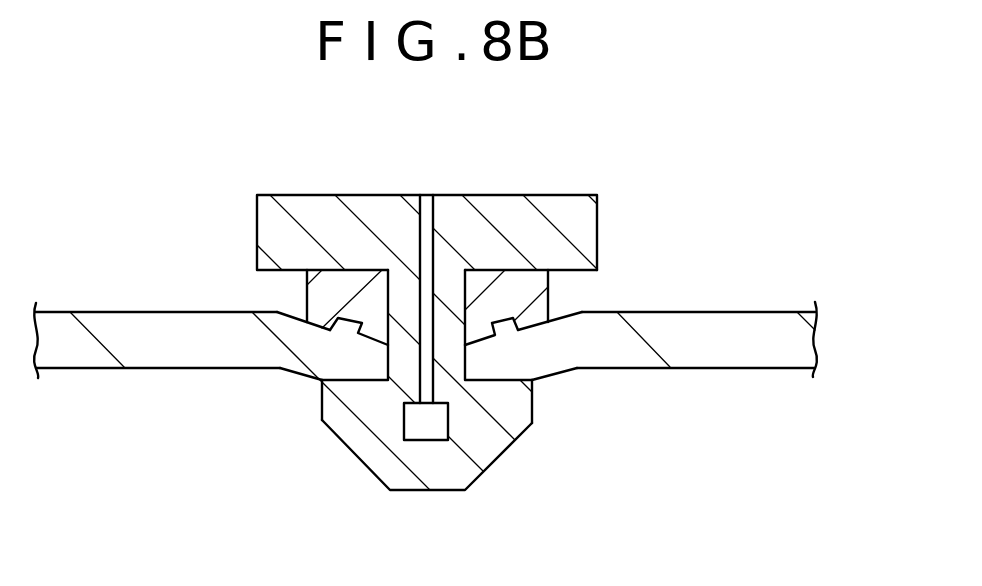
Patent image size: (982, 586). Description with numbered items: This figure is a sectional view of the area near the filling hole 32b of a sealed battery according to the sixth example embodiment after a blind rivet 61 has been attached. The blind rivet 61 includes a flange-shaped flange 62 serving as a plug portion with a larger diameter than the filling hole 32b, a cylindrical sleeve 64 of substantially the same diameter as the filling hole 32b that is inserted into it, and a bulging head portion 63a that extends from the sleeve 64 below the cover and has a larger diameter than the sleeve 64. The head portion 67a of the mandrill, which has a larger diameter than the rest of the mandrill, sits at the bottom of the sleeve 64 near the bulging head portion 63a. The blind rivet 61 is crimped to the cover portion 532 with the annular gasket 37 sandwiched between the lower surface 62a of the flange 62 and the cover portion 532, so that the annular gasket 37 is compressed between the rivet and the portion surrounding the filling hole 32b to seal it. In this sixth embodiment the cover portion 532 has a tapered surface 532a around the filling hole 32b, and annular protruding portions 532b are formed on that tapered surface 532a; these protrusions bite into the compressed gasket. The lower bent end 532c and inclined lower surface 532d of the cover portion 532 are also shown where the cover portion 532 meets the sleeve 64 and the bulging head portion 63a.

The blind rivet 61 is at (233, 163).
The flange 62 is at (532, 230).
The lower surface 62a is at (578, 271).
The sleeve 64 is at (410, 308).
The annular gasket 37 is at (540, 310).
The cover portion 532 is at (150, 340).
The tapered surface 532a is at (281, 313).
The annular protruding portions 532b is at (348, 328).
The bent end portion of plate member 532c is at (320, 420).
The inclined lower surface of plate member 532d is at (307, 376).
The filling hole 32b is at (397, 372).
The bulging head portion 63a is at (488, 402).
The head portion of mandrill 67a is at (420, 422).